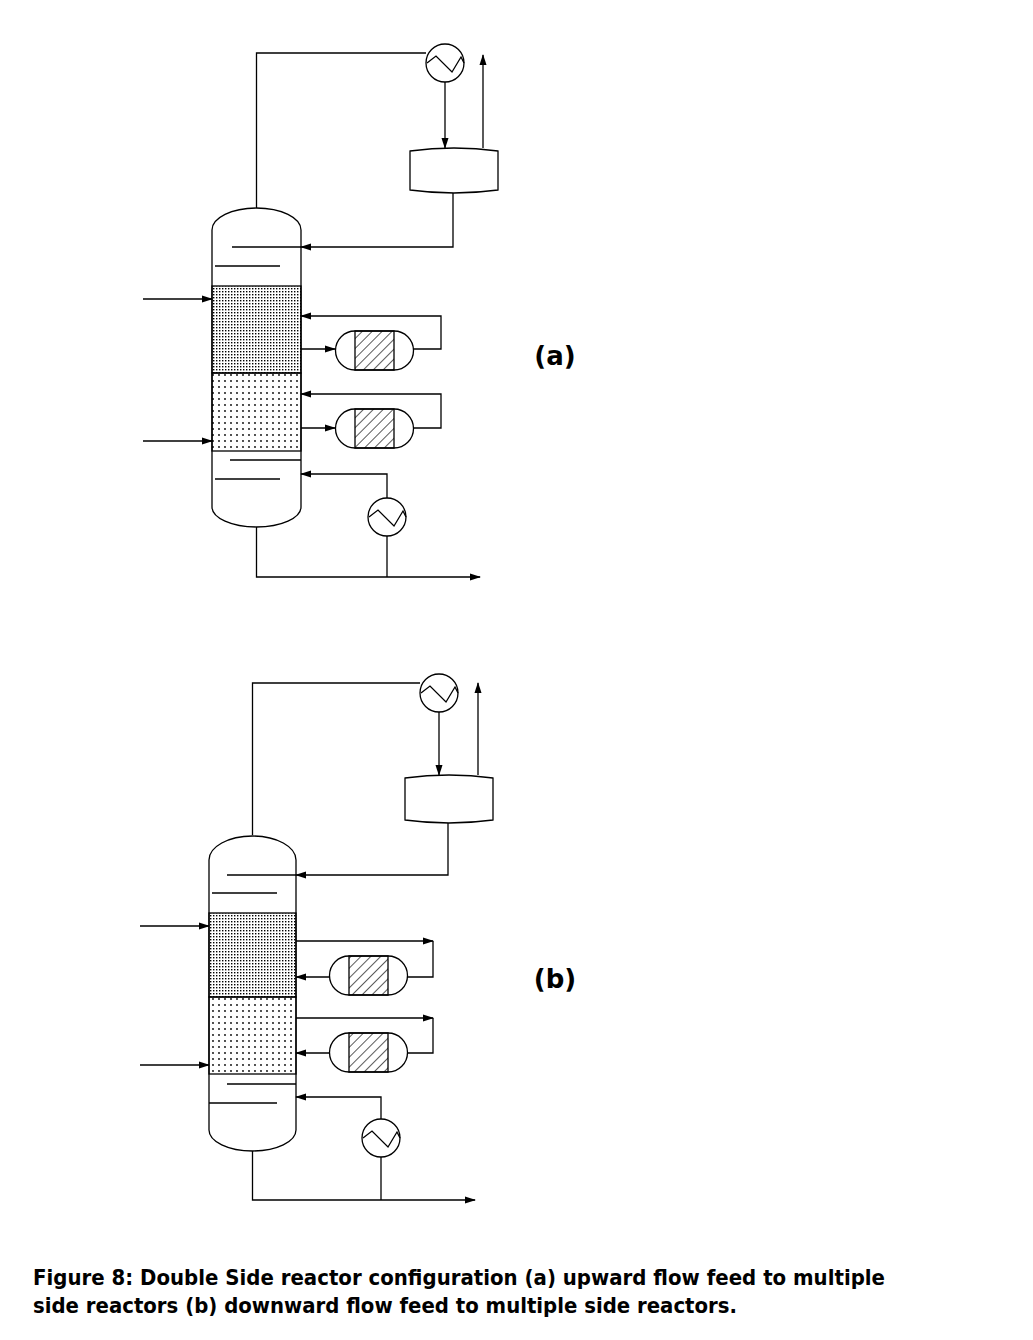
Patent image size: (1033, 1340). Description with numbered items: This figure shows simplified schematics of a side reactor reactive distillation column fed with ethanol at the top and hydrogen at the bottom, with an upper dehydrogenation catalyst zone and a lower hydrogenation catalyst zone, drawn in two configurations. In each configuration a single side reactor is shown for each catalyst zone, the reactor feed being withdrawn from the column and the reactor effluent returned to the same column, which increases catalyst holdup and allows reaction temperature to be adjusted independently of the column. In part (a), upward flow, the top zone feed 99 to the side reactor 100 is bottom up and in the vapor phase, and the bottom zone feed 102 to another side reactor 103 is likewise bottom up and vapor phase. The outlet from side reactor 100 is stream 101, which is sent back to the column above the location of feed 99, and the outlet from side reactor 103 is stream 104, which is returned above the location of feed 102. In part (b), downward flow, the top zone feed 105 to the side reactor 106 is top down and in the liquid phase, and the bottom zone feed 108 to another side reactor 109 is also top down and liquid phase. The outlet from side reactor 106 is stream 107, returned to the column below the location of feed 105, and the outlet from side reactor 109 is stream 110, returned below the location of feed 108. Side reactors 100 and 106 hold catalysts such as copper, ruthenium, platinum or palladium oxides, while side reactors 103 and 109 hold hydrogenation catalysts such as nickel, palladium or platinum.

The top zone feed 99 is at (305, 352).
The side reactor 100 is at (413, 365).
The outlet stream 101 is at (441, 330).
The bottom zone feed 102 is at (305, 430).
The side reactor 103 is at (413, 442).
The outlet stream 104 is at (441, 407).
The top zone feed 105 is at (433, 957).
The side reactor 106 is at (407, 990).
The outlet stream 107 is at (300, 980).
The bottom zone feed 108 is at (433, 1033).
The side reactor 109 is at (407, 1066).
The outlet stream 110 is at (300, 1056).